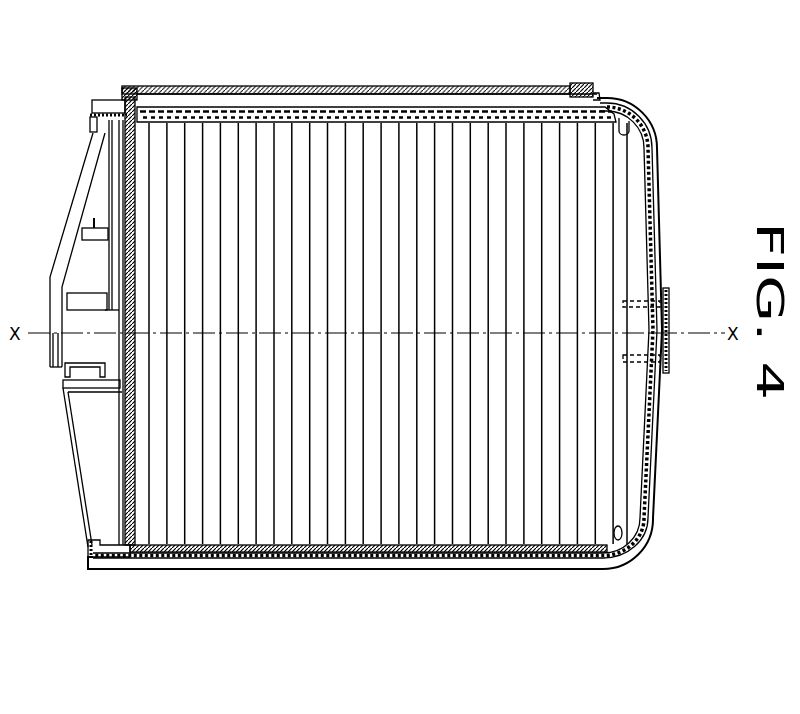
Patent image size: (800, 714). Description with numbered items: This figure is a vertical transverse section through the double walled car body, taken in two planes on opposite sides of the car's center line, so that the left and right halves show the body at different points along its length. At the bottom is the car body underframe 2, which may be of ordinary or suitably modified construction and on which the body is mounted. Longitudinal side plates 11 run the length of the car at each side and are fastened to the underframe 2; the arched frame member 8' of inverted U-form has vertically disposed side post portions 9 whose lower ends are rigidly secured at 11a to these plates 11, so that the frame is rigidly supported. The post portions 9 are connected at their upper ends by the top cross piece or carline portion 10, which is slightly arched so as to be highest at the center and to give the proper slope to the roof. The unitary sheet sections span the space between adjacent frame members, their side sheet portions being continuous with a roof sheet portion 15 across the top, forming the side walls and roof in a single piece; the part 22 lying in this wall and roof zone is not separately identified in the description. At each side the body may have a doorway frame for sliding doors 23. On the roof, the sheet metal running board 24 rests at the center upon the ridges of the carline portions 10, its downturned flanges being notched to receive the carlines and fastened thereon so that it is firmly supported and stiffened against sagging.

The car body underframe 2 is at (118, 202).
The liner end flange 8' is at (614, 330).
The side post portions 9 is at (127, 459).
The carline portion 10 is at (653, 425).
The longitudinal side plates 11 is at (133, 637).
The lower end securing point of post portions 11a is at (120, 542).
The roof sheet portion 15 is at (645, 470).
The top packing layer 22 is at (563, 102).
The sliding doors 23 is at (355, 88).
The running board 24 is at (673, 348).